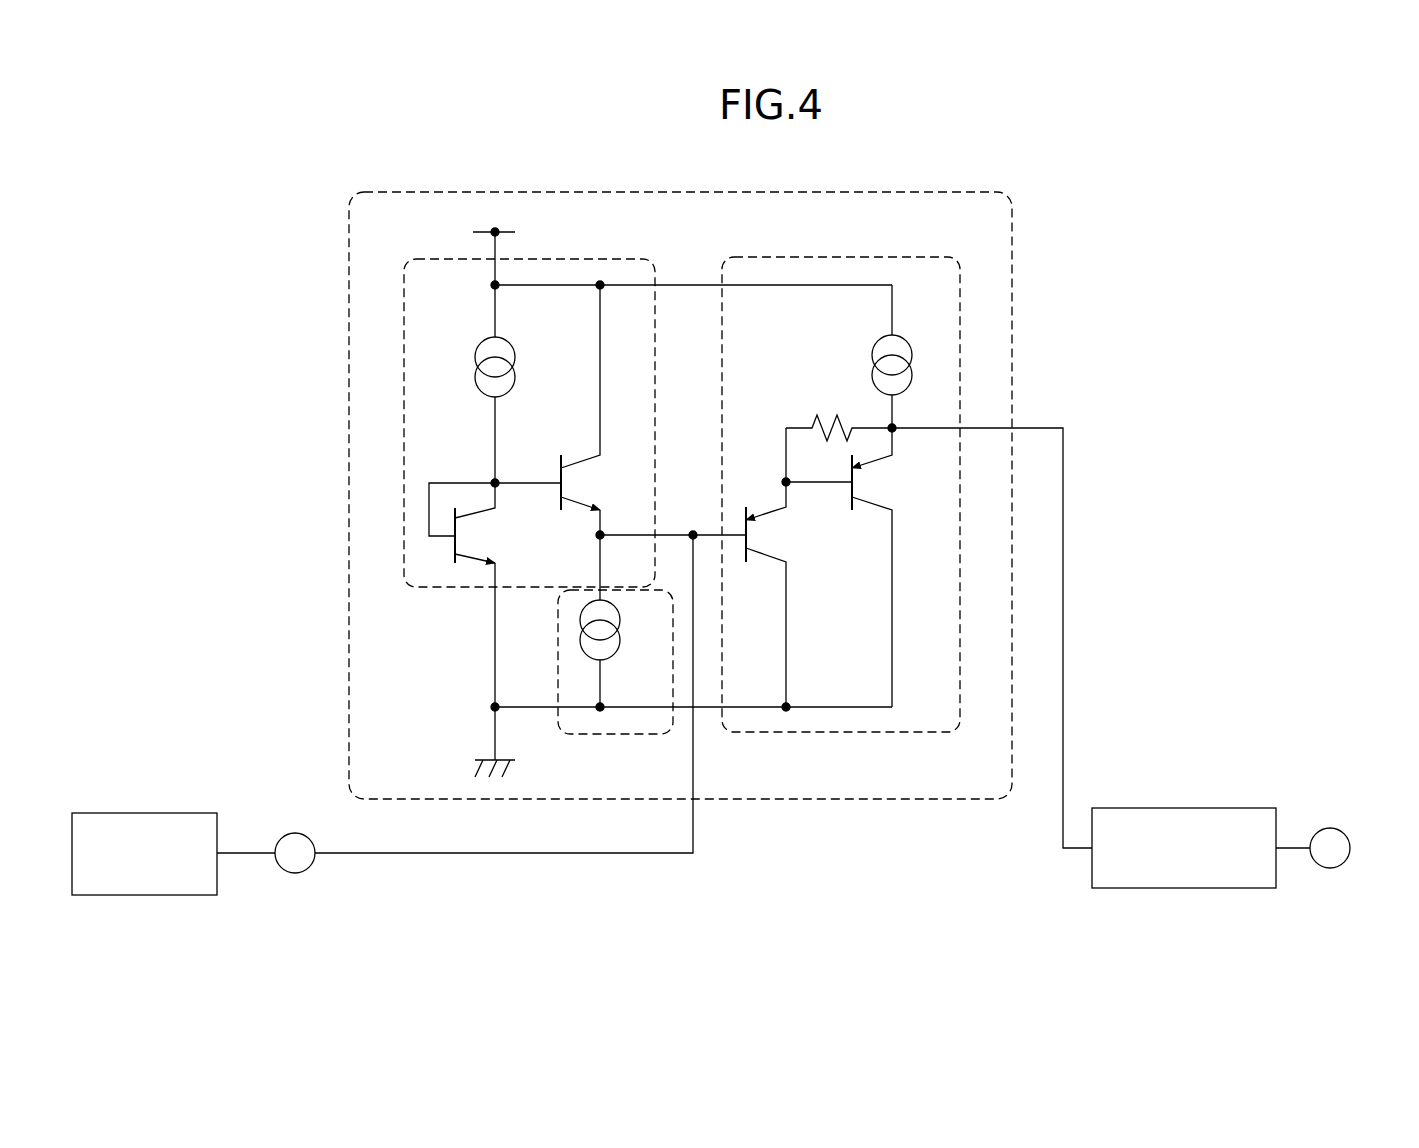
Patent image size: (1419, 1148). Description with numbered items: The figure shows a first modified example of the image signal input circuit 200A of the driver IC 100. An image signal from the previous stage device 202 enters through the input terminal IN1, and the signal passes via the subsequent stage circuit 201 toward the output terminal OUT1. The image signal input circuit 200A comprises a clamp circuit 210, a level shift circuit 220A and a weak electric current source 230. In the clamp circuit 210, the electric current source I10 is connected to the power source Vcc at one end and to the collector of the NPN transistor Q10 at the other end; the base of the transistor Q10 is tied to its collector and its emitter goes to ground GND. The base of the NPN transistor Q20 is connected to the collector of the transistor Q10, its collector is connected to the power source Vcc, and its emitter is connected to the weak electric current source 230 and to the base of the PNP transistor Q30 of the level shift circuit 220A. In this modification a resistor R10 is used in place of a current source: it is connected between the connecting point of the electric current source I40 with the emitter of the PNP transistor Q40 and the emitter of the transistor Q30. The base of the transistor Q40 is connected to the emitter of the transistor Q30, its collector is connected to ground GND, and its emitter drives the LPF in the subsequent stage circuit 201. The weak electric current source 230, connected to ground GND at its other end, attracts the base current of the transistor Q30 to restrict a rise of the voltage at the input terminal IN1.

The driver IC 100 is at (1110, 170).
The image signal input circuit 200A is at (932, 190).
The clamp circuit 210 is at (575, 259).
The level shift circuit 220A is at (877, 257).
The weak electric current source 230 is at (623, 735).
The subsequent stage circuit 201 is at (1185, 808).
The previous stage device 202 is at (153, 813).
The transistor Q10 is at (487, 595).
The transistor Q20 is at (573, 410).
The transistor Q30 is at (791, 594).
The transistor Q40 is at (864, 567).
The electric current source I10 is at (517, 384).
The electric current source I40 is at (914, 356).
The resistor R10 is at (839, 435).
The power source Vcc is at (494, 242).
The ground GND is at (663, 740).
The input terminal IN1 is at (266, 845).
The output terminal OUT1 is at (1341, 839).